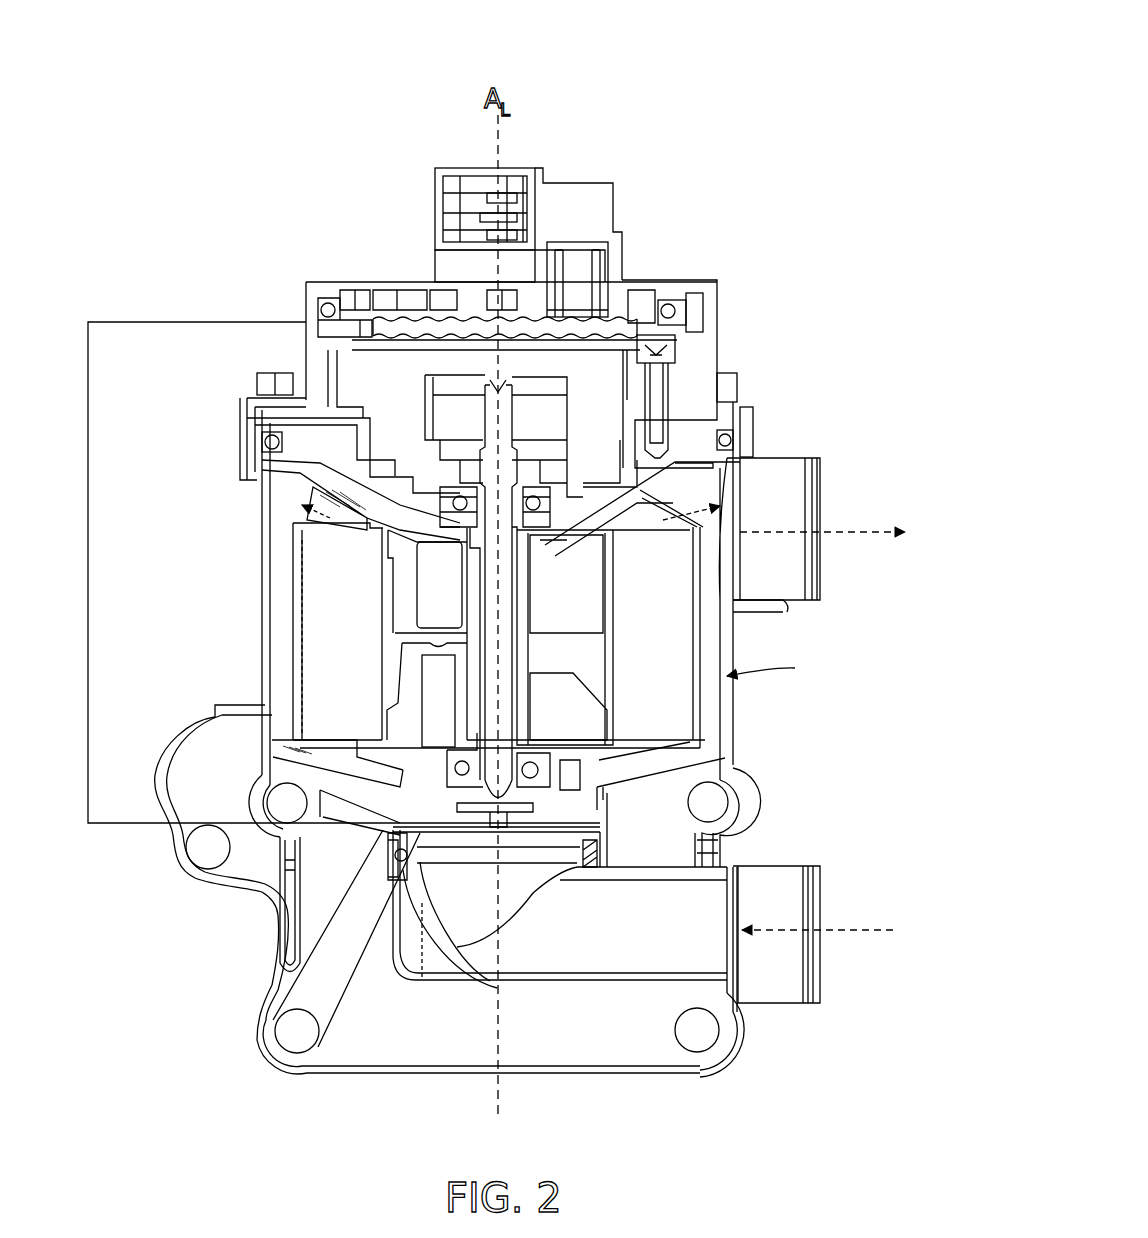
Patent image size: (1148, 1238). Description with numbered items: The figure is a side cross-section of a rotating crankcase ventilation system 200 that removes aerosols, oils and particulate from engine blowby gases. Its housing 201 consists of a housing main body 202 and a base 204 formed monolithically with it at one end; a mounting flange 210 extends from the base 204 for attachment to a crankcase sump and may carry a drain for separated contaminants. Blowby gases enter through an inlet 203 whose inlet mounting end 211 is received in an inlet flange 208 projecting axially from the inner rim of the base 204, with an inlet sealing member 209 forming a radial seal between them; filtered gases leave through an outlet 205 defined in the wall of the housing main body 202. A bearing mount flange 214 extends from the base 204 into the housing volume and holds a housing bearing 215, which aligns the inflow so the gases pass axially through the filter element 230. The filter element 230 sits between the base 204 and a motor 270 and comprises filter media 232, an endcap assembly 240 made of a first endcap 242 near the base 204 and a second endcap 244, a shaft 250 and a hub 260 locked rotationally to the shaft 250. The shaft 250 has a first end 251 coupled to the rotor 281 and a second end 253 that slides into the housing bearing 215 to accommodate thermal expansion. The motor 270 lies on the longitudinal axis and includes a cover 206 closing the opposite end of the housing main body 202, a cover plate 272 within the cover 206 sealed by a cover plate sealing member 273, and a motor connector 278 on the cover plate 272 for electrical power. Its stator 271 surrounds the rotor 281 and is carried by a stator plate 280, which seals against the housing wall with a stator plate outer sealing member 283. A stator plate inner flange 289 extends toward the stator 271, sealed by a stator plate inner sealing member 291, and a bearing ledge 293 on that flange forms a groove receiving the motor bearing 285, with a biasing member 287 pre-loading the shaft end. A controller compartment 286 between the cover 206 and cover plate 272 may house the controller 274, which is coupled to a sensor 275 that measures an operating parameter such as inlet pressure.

The rotating crankcase ventilation system 200 is at (668, 118).
The housing 201 is at (742, 638).
The housing main body 202 is at (731, 722).
The inlet 203 is at (788, 983).
The base 204 is at (320, 833).
The outlet 205 is at (788, 458).
The cover 206 is at (712, 313).
The inlet flange 208 is at (383, 858).
The inlet sealing member 209 is at (398, 850).
The mounting flange 210 is at (417, 1053).
The inlet mounting end 211 is at (432, 880).
The bearing mount flange 214 is at (577, 820).
The housing bearing 215 is at (567, 767).
The filter element 230 is at (326, 617).
The filter media 232 is at (320, 690).
The endcap assembly 240 is at (380, 623).
The first endcap 242 is at (293, 742).
The second endcap 244 is at (290, 606).
The shaft 250 is at (522, 561).
The first end 251 is at (486, 398).
The second end 253 is at (465, 750).
The hub 260 is at (383, 625).
The motor 270 is at (342, 366).
The stator 271 is at (343, 386).
The cover plate 272 is at (663, 290).
The cover plate sealing member 273 is at (675, 300).
The controller 274 is at (450, 312).
The sensor 275 is at (283, 938).
The motor connector 278 is at (430, 170).
The stator plate 280 is at (285, 424).
The rotor 281 is at (336, 312).
The stator plate outer sealing member 283 is at (264, 438).
The motor bearing 285 is at (312, 522).
The controller compartment 286 is at (430, 375).
The biasing member 287 is at (290, 460).
The stator plate inner flange 289 is at (610, 363).
The stator plate inner sealing member 291 is at (568, 500).
The bearing ledge 293 is at (537, 413).